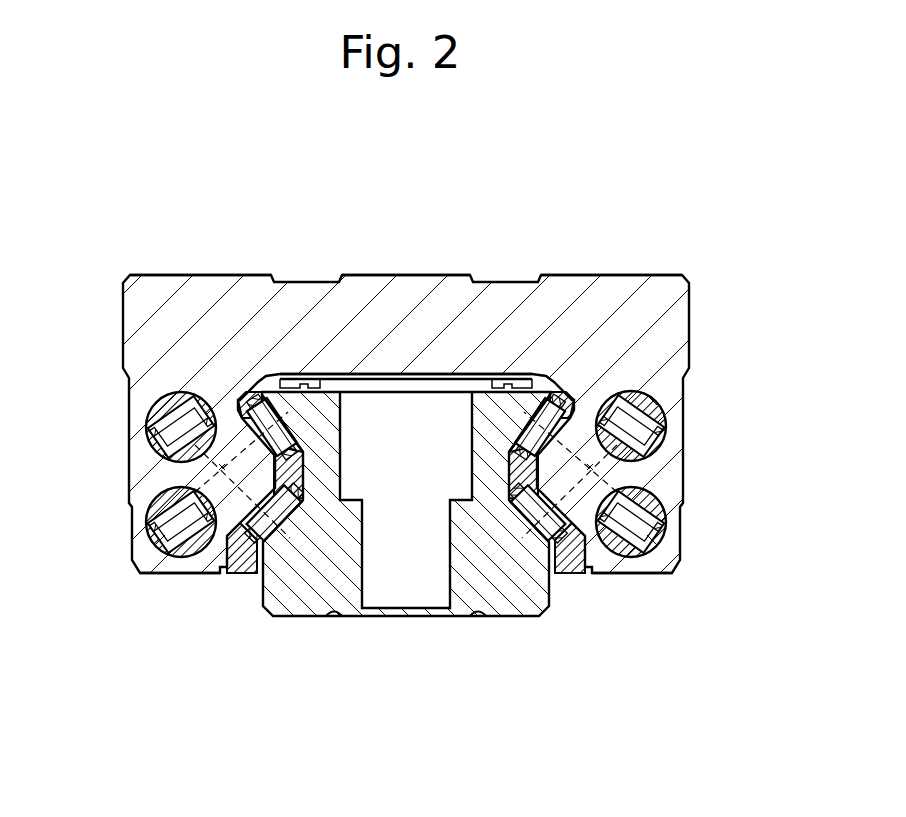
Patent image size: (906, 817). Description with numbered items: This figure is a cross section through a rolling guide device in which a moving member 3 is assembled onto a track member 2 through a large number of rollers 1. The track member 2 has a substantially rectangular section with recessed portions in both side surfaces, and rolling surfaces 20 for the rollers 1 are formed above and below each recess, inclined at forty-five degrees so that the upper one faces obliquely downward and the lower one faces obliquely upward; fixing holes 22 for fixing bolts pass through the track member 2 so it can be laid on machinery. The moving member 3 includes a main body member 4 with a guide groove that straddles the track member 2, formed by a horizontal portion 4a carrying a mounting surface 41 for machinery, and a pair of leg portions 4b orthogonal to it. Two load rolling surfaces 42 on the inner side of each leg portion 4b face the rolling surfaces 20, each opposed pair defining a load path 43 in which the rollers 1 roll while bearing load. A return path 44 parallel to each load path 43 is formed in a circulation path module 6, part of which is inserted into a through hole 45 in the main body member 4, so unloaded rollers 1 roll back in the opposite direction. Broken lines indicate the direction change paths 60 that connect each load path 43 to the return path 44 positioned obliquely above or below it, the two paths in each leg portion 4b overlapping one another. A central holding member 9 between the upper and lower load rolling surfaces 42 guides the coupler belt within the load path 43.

The roller 1 is at (288, 440).
The track member 2 is at (413, 540).
The moving member 3 is at (647, 271).
The main body member 4 is at (248, 292).
The horizontal portion 4a is at (400, 297).
The leg portion 4b is at (148, 572).
The circulation path module 6 is at (412, 476).
The central holding member 9 is at (300, 470).
The rolling surface 20 is at (263, 392).
The fixing hole 22 is at (364, 574).
The mounting surface 41 is at (148, 277).
The load rolling surface 42 is at (250, 515).
The load path 43 is at (285, 418).
The return path 44 is at (170, 442).
The through hole 45 is at (160, 400).
The direction change path 60 is at (228, 558).